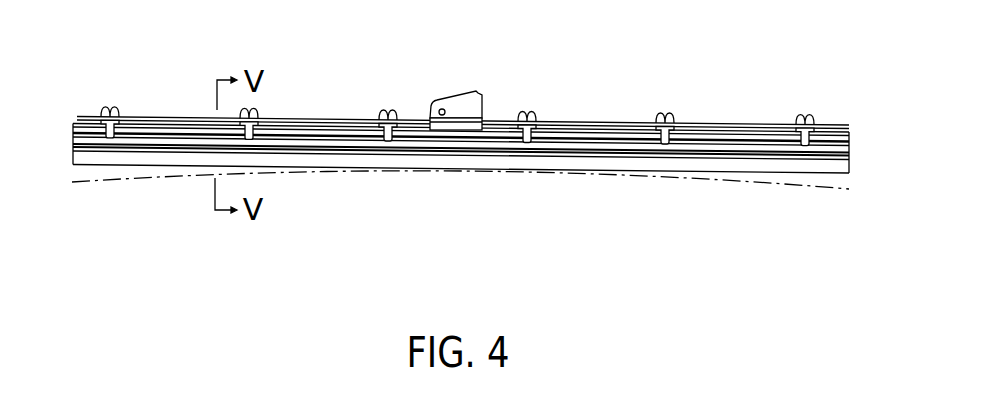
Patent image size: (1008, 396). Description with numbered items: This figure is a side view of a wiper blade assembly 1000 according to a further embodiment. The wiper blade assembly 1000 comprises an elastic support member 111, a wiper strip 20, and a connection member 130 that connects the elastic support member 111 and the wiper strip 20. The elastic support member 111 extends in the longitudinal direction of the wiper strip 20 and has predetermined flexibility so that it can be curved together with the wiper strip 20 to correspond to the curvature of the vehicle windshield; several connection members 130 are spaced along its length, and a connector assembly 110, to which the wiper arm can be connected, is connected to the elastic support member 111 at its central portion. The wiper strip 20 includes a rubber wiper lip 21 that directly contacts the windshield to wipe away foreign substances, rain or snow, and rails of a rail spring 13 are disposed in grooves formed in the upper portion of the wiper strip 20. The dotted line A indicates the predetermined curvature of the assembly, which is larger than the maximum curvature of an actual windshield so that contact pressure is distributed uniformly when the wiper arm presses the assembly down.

The wiper blade assembly 1000 is at (626, 108).
The rail spring 13 is at (74, 122).
The elastic support member 111 is at (169, 123).
The connection member 130 is at (106, 106).
The connector assembly 110 is at (477, 91).
The wiper strip 20 is at (73, 162).
The wiper lip 21 is at (169, 161).
The dotted line A is at (762, 185).